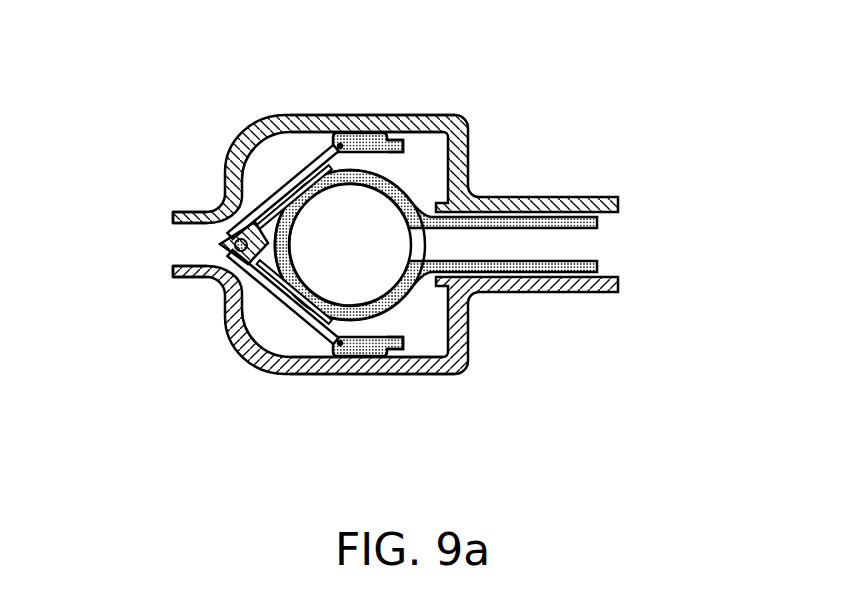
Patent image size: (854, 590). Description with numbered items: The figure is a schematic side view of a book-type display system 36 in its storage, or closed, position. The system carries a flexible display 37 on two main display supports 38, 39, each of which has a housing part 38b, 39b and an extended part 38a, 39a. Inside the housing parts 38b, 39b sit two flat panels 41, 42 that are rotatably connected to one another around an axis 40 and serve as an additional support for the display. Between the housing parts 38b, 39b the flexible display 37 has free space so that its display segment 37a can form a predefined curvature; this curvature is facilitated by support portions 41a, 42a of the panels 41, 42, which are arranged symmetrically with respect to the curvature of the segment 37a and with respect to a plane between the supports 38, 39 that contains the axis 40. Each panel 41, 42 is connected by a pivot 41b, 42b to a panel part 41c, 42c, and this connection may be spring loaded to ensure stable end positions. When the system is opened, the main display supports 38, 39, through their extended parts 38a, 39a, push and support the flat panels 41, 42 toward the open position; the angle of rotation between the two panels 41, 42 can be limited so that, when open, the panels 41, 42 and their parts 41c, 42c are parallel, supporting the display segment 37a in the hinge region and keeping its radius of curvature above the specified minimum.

The display system 36 is at (131, 74).
The display 37 is at (578, 229).
The display segment 37a is at (298, 245).
The main display support 38 is at (533, 197).
The extended part 38a is at (197, 212).
The housing part 38b is at (425, 113).
The main display support 39 is at (533, 292).
The extended part 39a is at (197, 278).
The housing part 39b is at (425, 376).
The axis 40 is at (226, 243).
The flat panel 41 is at (307, 113).
The support portion 41a is at (287, 176).
The pivot 41b is at (340, 115).
The panel part 41c is at (363, 115).
The flat panel 42 is at (305, 376).
The support portion 42a is at (287, 313).
The pivot 42b is at (340, 376).
The panel part 42c is at (363, 376).